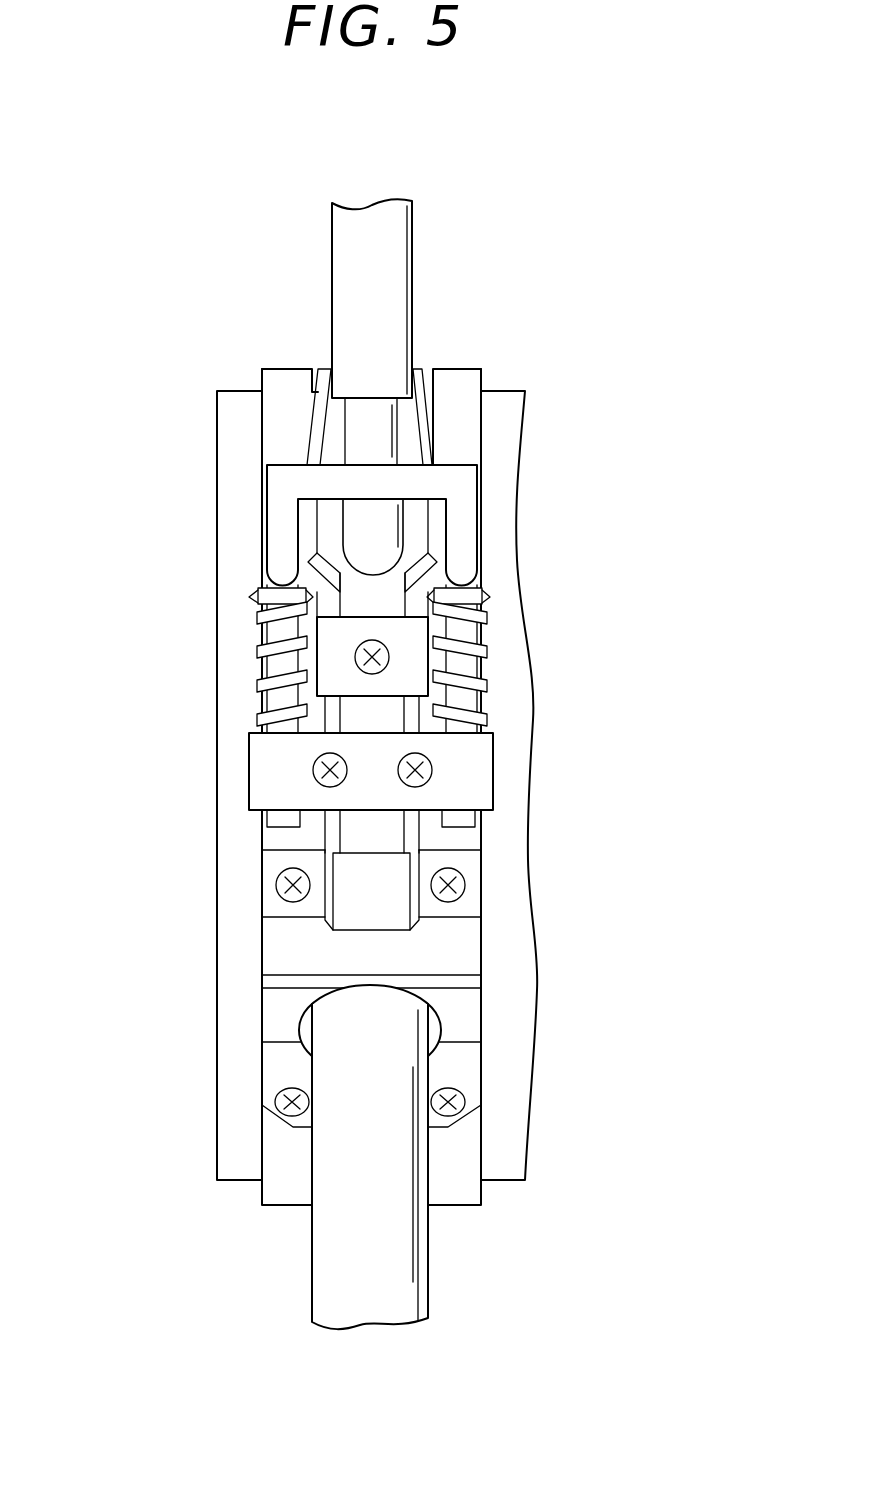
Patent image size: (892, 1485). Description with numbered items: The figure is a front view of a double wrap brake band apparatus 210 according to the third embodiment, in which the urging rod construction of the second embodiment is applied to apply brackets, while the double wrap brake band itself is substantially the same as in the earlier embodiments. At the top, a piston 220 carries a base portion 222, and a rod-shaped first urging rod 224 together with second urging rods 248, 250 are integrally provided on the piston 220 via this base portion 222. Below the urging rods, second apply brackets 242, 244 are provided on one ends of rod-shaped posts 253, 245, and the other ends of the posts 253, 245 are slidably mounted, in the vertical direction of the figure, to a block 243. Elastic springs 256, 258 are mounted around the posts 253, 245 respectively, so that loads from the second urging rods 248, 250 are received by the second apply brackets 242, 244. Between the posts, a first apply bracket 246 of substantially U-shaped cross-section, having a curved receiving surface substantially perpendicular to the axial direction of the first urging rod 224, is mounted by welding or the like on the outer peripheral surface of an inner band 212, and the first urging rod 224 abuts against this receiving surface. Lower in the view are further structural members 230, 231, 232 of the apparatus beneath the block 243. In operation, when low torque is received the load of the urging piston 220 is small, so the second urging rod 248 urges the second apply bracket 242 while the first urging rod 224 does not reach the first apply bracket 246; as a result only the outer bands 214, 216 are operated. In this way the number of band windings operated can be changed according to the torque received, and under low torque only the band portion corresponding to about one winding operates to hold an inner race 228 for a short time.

The double wrap brake band apparatus 210 is at (583, 241).
The inner band 212 is at (413, 420).
The outer band 214 is at (281, 373).
The outer band 216 is at (473, 380).
The piston 220 is at (431, 283).
The base portion 222 is at (403, 247).
The first urging rod 224 is at (382, 543).
The inner race 228 is at (513, 413).
The lower support block 230 is at (465, 957).
The intermediate block 231 is at (470, 907).
The lower shaft 232 is at (413, 1298).
The second apply bracket 242 is at (256, 598).
The block 243 is at (491, 777).
The second apply bracket 244 is at (380, 601).
The rod-shaped post 245 is at (482, 700).
The first apply bracket 246 is at (436, 608).
The second urging rod 248 is at (278, 563).
The second urging rod 250 is at (463, 560).
The rod-shaped post 253 is at (257, 635).
The elastic spring 256 is at (257, 657).
The elastic spring 258 is at (480, 678).